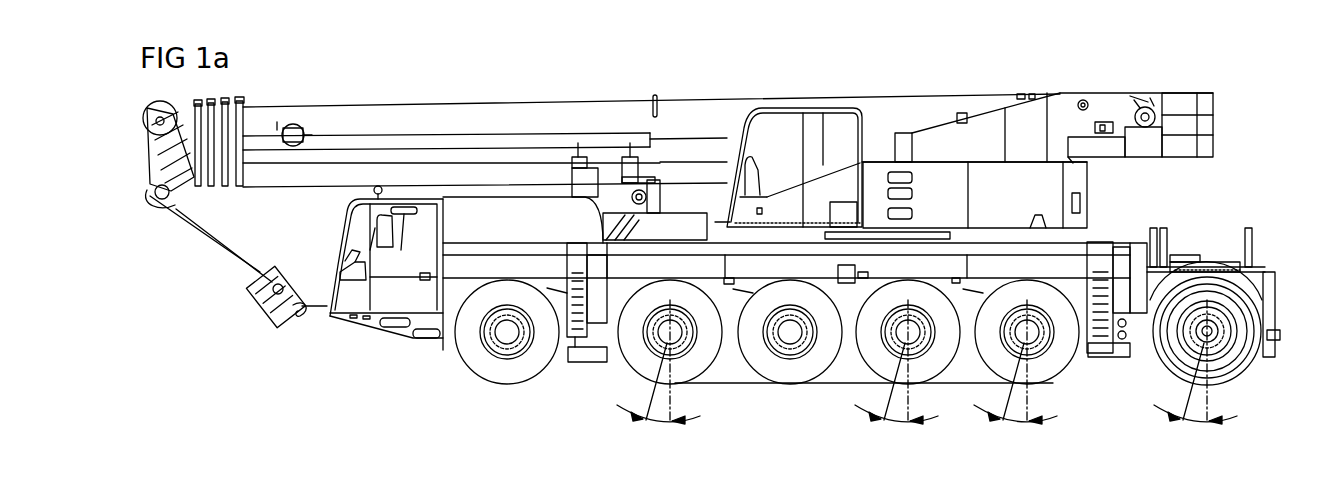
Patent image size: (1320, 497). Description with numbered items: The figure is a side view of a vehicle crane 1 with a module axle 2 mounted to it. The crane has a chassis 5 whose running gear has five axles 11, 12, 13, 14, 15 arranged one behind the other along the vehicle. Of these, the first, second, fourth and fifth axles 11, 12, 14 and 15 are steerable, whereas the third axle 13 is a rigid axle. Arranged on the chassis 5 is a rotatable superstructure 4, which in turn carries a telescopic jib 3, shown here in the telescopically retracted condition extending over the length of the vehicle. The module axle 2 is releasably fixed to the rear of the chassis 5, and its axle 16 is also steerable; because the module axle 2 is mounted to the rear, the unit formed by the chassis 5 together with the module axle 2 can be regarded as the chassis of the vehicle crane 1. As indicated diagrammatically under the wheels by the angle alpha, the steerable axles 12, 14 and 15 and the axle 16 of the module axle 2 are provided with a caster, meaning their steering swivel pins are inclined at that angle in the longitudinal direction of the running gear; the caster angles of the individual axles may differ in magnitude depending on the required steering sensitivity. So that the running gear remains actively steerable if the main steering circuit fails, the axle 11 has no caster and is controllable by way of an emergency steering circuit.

The vehicle crane 1 is at (240, 329).
The module axle 2 is at (1257, 271).
The telescopic jib 3 is at (450, 118).
The rotatable superstructure 4 is at (946, 178).
The chassis 5 is at (1070, 257).
The first axle 11 is at (482, 367).
The second axle 12 is at (693, 368).
The third axle 13 is at (807, 368).
The fourth axle 14 is at (927, 368).
The fifth axle 15 is at (1053, 368).
The axle of the module axle 16 is at (1230, 368).